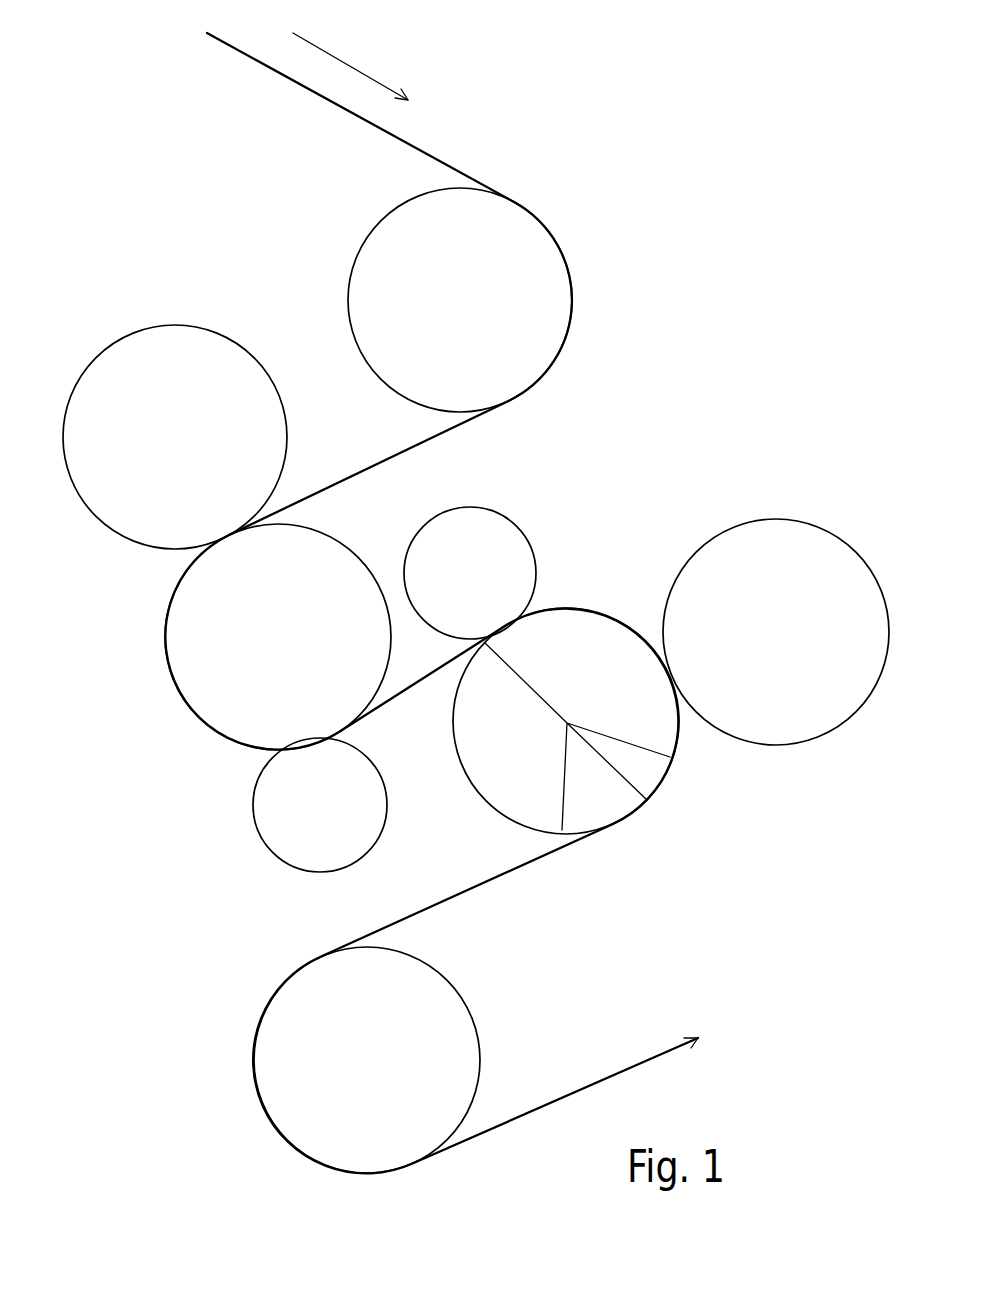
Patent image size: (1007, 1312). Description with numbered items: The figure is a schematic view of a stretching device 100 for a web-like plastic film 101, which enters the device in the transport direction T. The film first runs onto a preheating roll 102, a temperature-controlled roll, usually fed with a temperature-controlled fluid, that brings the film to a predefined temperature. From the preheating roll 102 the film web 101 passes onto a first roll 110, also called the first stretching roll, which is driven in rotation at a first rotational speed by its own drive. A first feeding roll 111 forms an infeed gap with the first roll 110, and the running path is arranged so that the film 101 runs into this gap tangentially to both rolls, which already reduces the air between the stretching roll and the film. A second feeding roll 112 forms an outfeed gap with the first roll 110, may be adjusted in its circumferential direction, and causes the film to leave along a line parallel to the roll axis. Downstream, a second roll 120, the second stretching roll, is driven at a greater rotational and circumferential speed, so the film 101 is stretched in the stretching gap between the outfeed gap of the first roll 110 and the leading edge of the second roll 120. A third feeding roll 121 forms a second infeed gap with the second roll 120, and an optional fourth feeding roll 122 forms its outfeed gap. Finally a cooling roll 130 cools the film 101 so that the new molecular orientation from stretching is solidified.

The stretching device 100 is at (735, 262).
The plastic film 101 is at (382, 132).
The preheating roll 102 is at (482, 233).
The first roll 110 is at (205, 638).
The first feeding roll 111 is at (178, 512).
The second feeding roll 112 is at (293, 813).
The second roll 120 is at (624, 776).
The third feeding roll 121 is at (513, 583).
The fourth feeding roll 122 is at (758, 697).
The cooling roll 130 is at (295, 1067).
The transport direction T is at (350, 66).